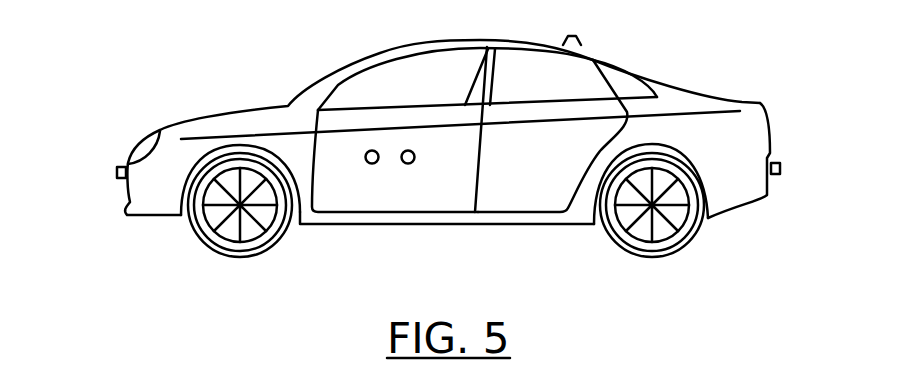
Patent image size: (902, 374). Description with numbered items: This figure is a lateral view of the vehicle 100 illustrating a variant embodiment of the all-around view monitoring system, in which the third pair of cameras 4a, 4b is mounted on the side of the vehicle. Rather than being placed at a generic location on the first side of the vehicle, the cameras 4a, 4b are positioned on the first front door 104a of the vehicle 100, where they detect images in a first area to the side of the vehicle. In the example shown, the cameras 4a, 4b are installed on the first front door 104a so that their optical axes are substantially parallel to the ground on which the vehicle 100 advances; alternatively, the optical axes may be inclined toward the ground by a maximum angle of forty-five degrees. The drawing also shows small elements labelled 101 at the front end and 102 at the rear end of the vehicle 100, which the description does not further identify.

The vehicle 100 is at (598, 51).
The front sensor 101 is at (111, 158).
The rear sensor 102 is at (787, 132).
The camera 4a is at (372, 150).
The camera 4b is at (408, 164).
The first front door 104a is at (440, 190).